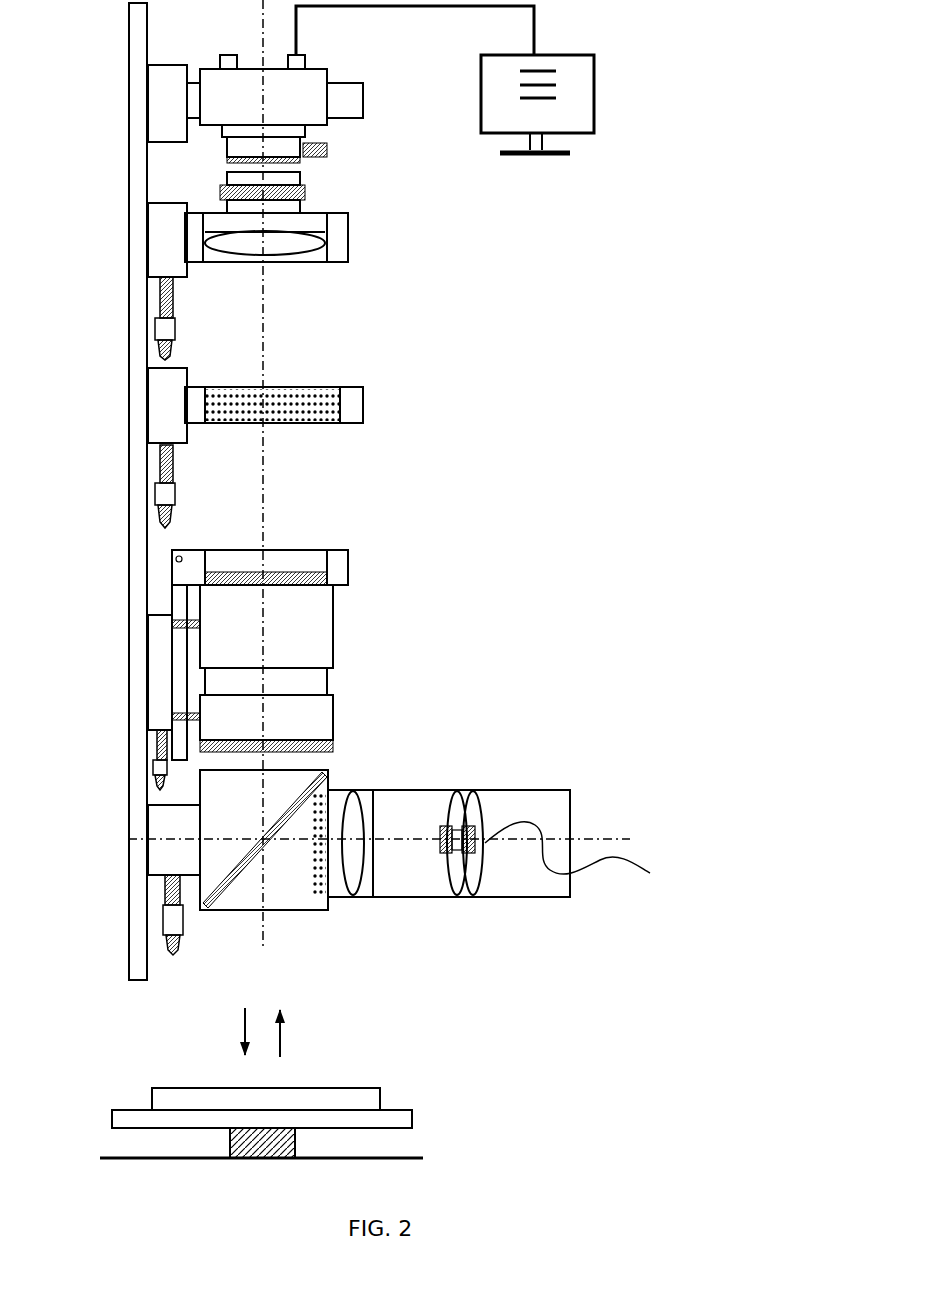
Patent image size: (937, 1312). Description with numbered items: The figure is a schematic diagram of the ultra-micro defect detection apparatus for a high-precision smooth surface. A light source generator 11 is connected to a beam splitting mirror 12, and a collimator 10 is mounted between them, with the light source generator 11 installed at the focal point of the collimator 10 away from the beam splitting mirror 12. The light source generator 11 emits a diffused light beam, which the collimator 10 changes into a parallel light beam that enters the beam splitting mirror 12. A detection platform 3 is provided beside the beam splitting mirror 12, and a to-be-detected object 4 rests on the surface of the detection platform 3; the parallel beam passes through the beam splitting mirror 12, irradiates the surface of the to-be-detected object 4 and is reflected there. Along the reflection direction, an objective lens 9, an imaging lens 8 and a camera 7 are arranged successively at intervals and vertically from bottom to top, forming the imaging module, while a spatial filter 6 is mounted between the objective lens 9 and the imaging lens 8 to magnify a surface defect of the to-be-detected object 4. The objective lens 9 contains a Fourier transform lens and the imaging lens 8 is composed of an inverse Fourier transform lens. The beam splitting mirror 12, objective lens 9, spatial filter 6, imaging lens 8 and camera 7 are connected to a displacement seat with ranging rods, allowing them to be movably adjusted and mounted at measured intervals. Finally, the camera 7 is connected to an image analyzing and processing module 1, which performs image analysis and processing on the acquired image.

The image analyzing and processing module 1 is at (598, 92).
The detection platform 3 is at (414, 1110).
The to-be-detected object 4 is at (148, 1085).
The spatial filter 6 is at (366, 386).
The camera 7 is at (362, 80).
The imaging lens 8 is at (352, 240).
The objective lens 9 is at (343, 617).
The collimator 10 is at (378, 784).
The light source generator 11 is at (478, 884).
The beam splitting mirror 12 is at (287, 913).